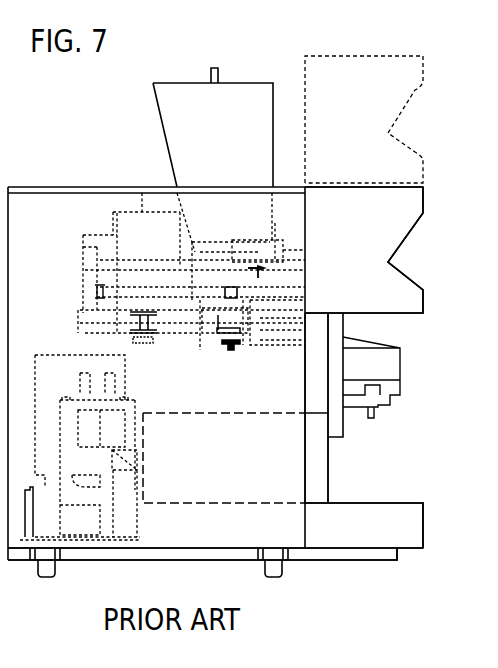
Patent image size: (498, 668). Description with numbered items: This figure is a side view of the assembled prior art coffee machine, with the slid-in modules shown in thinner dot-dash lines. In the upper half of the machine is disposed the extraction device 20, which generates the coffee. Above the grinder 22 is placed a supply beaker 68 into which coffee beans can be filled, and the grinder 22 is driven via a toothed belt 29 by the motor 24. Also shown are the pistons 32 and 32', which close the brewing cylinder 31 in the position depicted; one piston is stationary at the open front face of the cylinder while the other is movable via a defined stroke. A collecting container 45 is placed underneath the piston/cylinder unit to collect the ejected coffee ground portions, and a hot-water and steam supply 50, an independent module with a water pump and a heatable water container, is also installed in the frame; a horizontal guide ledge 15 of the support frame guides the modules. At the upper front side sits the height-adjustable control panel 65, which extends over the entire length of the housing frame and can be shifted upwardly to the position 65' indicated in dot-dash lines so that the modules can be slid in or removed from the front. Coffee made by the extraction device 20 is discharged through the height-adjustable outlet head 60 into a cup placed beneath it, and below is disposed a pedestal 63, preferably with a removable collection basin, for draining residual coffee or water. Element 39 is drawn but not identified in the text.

The supply beaker 68 is at (182, 123).
The driving element 24 is at (143, 200).
The drive assembly 39 is at (125, 258).
The piston 32' is at (231, 253).
The grinder 22 is at (237, 243).
The assembly position of control panel 65' is at (375, 119).
The control panel 65 is at (373, 250).
The outlet head 60 is at (382, 366).
The toothed belt 29 is at (182, 340).
The brewing cylinder 31 is at (206, 340).
The extraction device 20 is at (214, 356).
The piston 32 is at (273, 343).
The hot-water and steam supply 50 is at (140, 455).
The collecting container 45 is at (322, 466).
The guide ledge 15 is at (273, 505).
The pedestal 63 is at (378, 540).